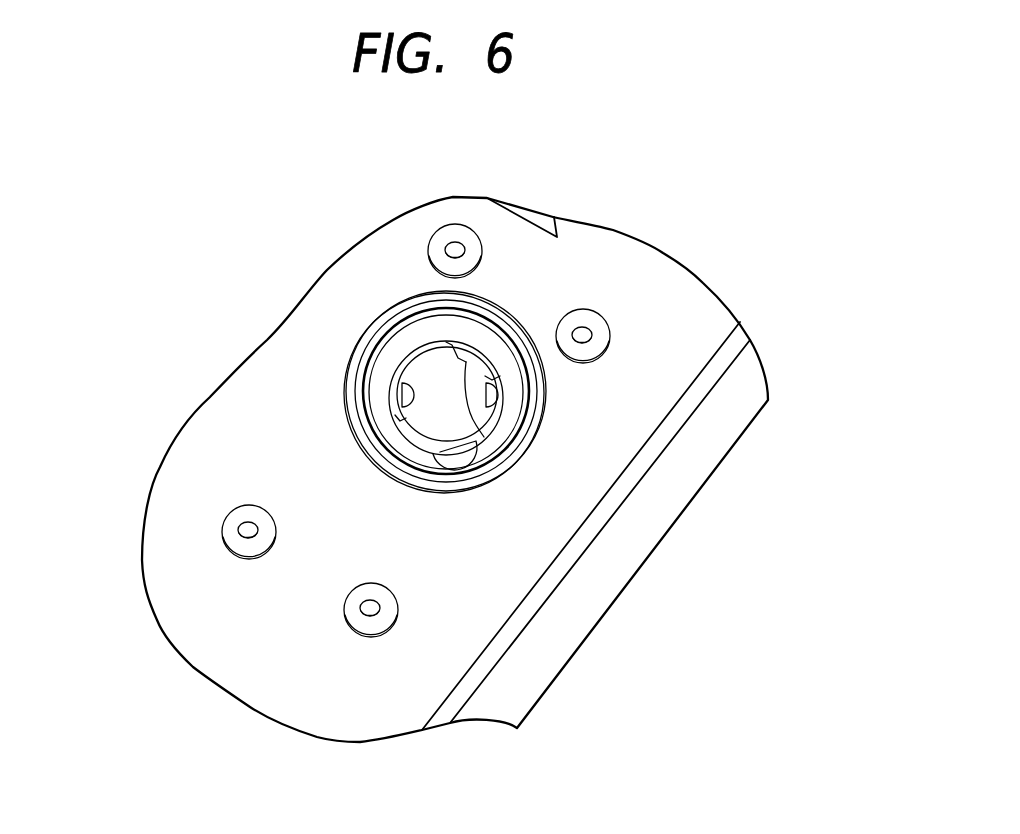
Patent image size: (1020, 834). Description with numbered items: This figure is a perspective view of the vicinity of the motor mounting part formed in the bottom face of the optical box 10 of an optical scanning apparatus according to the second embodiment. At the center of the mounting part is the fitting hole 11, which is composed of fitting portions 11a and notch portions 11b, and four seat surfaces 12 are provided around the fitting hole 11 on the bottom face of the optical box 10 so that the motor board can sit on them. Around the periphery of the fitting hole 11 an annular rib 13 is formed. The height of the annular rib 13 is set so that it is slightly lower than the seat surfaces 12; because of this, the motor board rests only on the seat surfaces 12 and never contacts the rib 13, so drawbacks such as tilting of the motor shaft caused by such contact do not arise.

The optical box 10 is at (700, 310).
The fitting hole 11 is at (390, 428).
The fitting portion 11a is at (401, 377).
The notch portion 11b is at (424, 437).
The seat surface 12 is at (452, 232).
The annular rib 13 is at (543, 423).